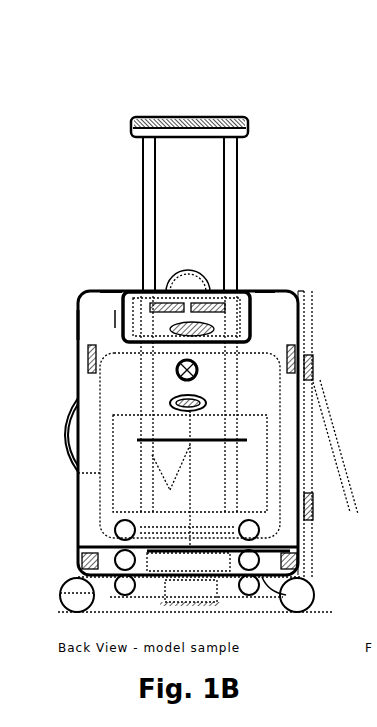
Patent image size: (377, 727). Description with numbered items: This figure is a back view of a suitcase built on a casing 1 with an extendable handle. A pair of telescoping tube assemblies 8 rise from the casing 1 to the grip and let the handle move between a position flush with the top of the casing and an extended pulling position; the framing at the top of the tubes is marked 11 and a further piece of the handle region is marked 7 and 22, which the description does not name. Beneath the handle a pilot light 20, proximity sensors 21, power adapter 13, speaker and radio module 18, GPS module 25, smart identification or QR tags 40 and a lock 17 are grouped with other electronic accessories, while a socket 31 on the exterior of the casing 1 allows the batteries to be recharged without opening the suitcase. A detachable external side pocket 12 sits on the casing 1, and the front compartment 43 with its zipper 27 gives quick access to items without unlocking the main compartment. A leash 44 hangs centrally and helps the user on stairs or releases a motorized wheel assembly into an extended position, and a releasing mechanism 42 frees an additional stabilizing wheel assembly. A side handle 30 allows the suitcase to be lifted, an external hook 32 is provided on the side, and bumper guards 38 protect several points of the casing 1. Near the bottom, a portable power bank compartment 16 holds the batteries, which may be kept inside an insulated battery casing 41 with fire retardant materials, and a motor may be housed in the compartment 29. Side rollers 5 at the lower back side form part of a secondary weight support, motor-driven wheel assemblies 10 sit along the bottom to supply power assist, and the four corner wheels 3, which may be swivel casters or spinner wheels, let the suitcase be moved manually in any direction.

The casing 1 is at (74, 492).
The wheels 3 is at (187, 595).
The side rollers 5 is at (112, 568).
The frame 7 is at (105, 266).
The telescoping tube assemblies 8 is at (171, 472).
The wheel assemblies 10 is at (195, 581).
The handle grip 11 is at (345, 160).
The detachable external side pocket 12 is at (270, 470).
The power adapter 13 is at (210, 287).
The portable power bank compartment 16 is at (376, 562).
The lock 17 is at (112, 288).
The speaker and radio module 18 is at (266, 292).
The pilot light 20 is at (184, 286).
The proximity sensors 21 is at (121, 292).
The handle housing 22 is at (136, 290).
The GPS module 25 is at (112, 358).
The zipper 27 is at (183, 439).
The compartment 29 is at (62, 592).
The side handle 30 is at (60, 418).
The socket 31 is at (121, 317).
The external hook 32 is at (376, 388).
The bumper guards 38 is at (302, 562).
The smart identification or QR tags 40 is at (251, 327).
The insulated battery casing 41 is at (244, 292).
The releasing mechanism 42 is at (197, 370).
The front compartment 43 is at (78, 473).
The leash 44 is at (192, 471).